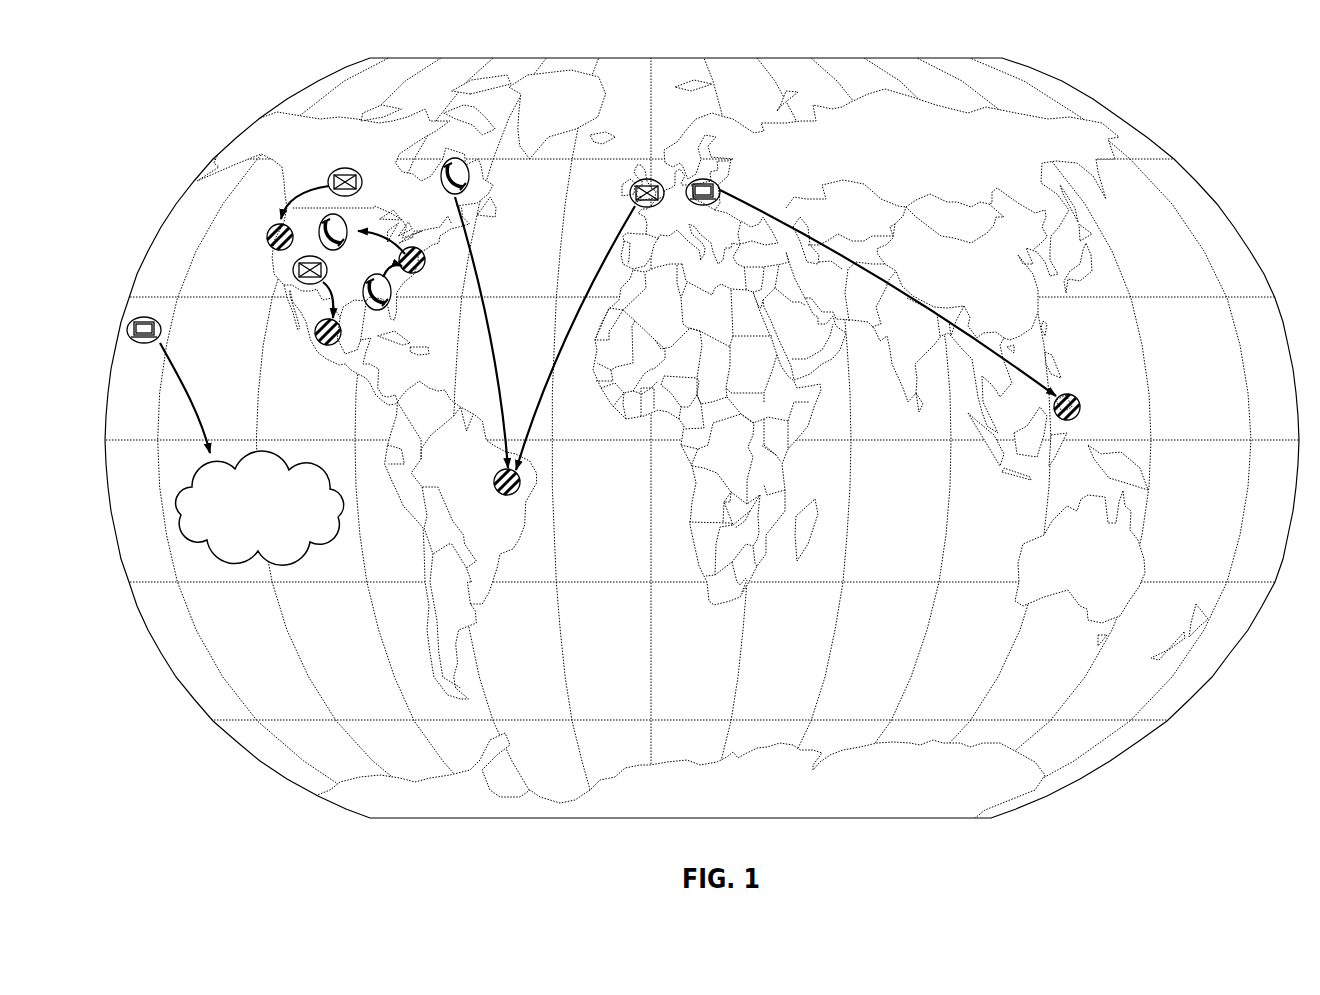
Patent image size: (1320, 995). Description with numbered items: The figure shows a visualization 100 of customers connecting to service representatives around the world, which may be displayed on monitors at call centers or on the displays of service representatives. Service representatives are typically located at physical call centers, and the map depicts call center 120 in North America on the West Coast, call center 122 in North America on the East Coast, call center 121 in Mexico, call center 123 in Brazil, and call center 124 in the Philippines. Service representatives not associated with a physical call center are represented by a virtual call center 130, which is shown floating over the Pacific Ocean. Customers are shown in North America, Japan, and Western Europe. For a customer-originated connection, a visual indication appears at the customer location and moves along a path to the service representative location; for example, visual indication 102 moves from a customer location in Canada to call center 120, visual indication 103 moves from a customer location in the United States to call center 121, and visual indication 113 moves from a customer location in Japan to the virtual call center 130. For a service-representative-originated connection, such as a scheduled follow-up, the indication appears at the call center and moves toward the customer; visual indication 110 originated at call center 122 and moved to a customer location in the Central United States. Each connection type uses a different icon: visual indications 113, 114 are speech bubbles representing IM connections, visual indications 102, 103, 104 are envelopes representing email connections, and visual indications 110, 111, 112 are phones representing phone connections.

The visualization 100 is at (1196, 68).
The visual indication 102 is at (345, 167).
The visual indication 103 is at (294, 270).
The visual indication 104 is at (633, 185).
The visual indication 110 is at (350, 214).
The visual indication 111 is at (470, 180).
The visual indication 112 is at (392, 313).
The visual indication 113 is at (141, 346).
The visual indication 114 is at (718, 181).
The call center 120 is at (266, 237).
The call center 121 is at (322, 343).
The call center 122 is at (420, 273).
The call center 123 is at (519, 485).
The call center 124 is at (1080, 404).
The virtual call center 130 is at (260, 508).